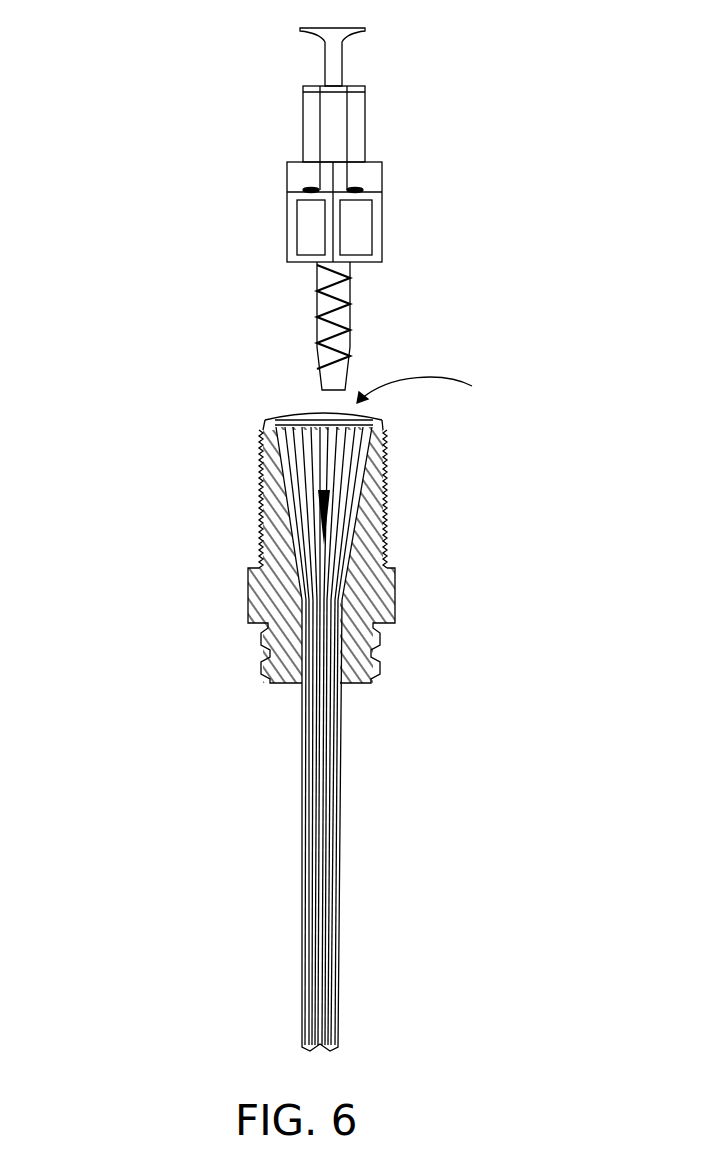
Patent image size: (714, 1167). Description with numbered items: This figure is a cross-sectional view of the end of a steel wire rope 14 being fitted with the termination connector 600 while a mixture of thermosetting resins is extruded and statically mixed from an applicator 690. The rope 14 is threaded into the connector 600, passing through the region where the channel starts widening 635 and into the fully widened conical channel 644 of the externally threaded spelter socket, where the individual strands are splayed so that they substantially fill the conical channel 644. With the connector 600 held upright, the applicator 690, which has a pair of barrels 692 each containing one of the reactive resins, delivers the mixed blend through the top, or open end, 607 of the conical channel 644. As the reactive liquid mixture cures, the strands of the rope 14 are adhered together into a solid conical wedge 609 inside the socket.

The applicator 690 is at (228, 197).
The barrels 692 is at (353, 238).
The open end 607 is at (439, 386).
The termination connector 600 is at (171, 476).
The fully widened conical channel 644 is at (385, 457).
The solid conical wedge 609 is at (320, 502).
The widening channel 635 is at (302, 605).
The steel wire rope 14 is at (320, 848).